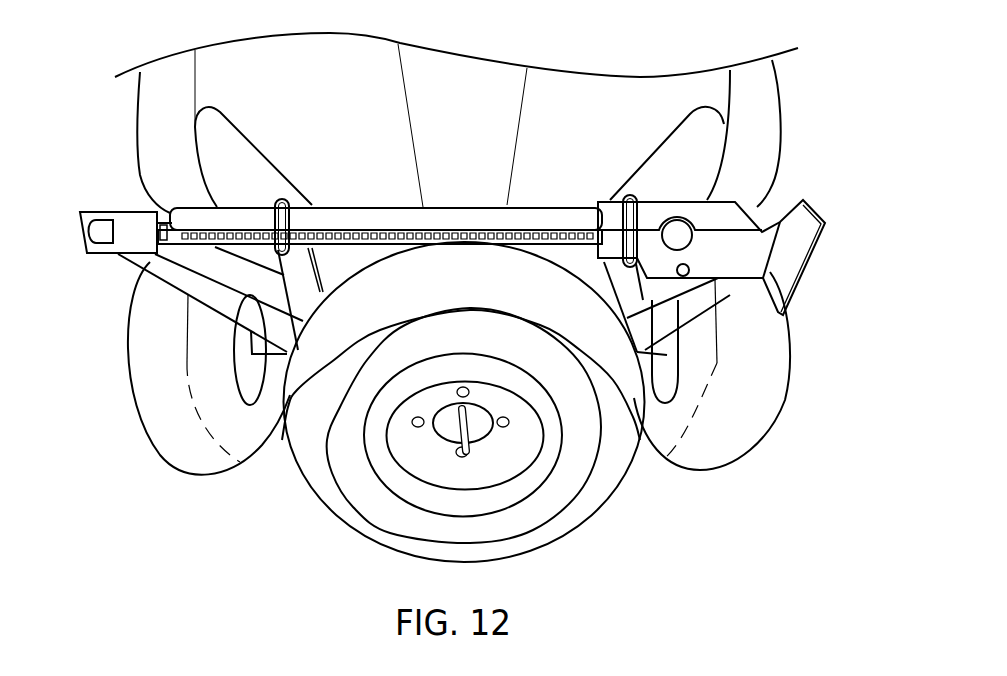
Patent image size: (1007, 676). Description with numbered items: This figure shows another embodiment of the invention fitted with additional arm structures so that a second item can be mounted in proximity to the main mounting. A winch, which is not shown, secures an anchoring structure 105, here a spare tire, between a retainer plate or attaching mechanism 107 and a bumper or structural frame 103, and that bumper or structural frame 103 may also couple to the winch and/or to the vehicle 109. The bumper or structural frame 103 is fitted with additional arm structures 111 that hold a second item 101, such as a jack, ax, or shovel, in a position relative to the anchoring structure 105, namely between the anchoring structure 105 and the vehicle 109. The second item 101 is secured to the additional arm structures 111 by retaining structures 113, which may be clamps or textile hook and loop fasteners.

The second item 101 is at (460, 222).
The bumper or structural frame 103 is at (690, 283).
The anchoring structure 105 is at (577, 453).
The retainer plate or attaching mechanism 107 is at (457, 430).
The vehicle 109 is at (652, 120).
The additional arm structures 111 is at (305, 288).
The retaining structures 113 is at (293, 212).